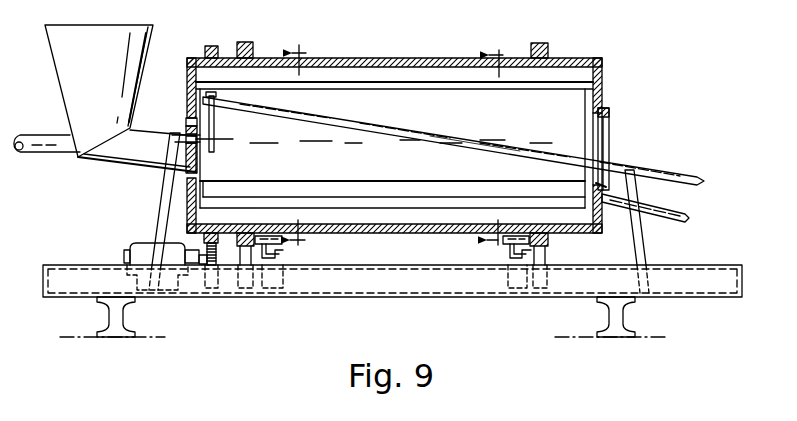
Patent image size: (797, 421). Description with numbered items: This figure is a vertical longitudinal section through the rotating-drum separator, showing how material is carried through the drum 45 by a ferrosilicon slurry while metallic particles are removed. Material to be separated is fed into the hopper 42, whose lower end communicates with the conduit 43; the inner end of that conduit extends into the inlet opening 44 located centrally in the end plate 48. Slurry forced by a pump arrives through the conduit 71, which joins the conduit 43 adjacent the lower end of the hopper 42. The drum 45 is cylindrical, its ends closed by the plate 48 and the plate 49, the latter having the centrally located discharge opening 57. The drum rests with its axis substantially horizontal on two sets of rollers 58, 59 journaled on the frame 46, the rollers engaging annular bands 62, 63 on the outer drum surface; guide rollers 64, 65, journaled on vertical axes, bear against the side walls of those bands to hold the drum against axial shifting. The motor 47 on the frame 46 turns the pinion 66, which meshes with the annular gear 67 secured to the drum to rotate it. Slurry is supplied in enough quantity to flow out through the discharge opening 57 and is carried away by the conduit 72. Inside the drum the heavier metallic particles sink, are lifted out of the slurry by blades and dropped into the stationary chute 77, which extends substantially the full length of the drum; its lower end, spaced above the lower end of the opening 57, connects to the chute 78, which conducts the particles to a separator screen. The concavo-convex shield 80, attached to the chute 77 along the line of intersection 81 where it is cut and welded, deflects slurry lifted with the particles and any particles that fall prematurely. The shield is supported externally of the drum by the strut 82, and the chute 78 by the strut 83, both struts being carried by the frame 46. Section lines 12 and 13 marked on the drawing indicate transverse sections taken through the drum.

The section line 12- 12 is at (291, 148).
The section line 13- 13 is at (484, 147).
The hopper 42 is at (62, 72).
The conduit 43 is at (108, 162).
The inlet opening 44 is at (185, 128).
The drum 45 is at (377, 58).
The frame 46 is at (57, 292).
The motor 47 is at (139, 245).
The plate 48 is at (187, 82).
The plate 49 is at (603, 96).
The discharge opening 57 is at (604, 130).
The set of rollers 58 is at (248, 248).
The set of rollers 59 is at (546, 255).
The annular band 62 is at (249, 42).
The annular band 63 is at (547, 44).
The guide roller 64 is at (273, 247).
The guide roller 65 is at (507, 246).
The pinion 66 is at (223, 250).
The gear 67 is at (217, 32).
The conduit 71 is at (36, 153).
The conduit 72 is at (681, 212).
The chute 77 is at (292, 117).
The chute 78 is at (663, 172).
The shield 80 is at (390, 163).
The line of intersection 81 is at (520, 160).
The strut 82 is at (160, 200).
The strut 83 is at (641, 237).